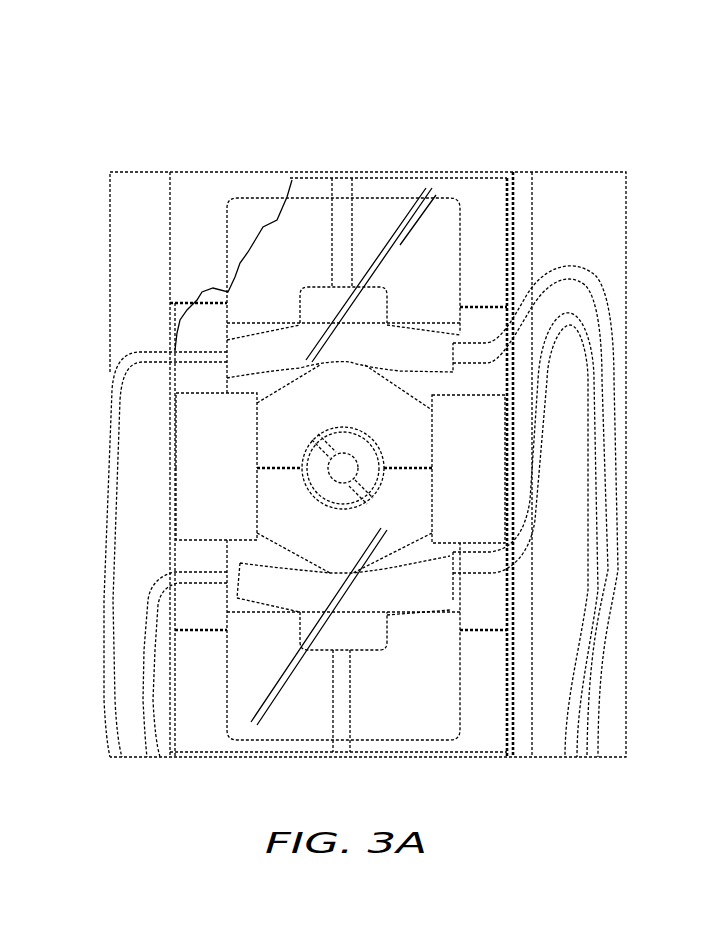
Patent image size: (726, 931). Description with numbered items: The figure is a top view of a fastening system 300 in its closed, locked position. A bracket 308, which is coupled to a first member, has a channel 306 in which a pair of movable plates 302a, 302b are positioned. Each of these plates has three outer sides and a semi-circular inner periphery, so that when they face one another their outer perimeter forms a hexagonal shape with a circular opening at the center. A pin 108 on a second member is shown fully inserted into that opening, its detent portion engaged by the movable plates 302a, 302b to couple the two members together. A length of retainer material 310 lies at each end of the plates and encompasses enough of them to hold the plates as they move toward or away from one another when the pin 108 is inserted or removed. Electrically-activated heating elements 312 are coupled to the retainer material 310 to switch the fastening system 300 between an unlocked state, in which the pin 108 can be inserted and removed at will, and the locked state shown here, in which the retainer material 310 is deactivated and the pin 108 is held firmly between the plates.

The fastening system 300 is at (193, 111).
The bracket 308 is at (378, 178).
The channel 306 is at (317, 298).
The retainer material 310 is at (398, 340).
The electrically-activated heating elements 312 is at (600, 385).
The movable plate 302a is at (257, 440).
The movable plate 302b is at (257, 510).
The pin 108 is at (435, 452).